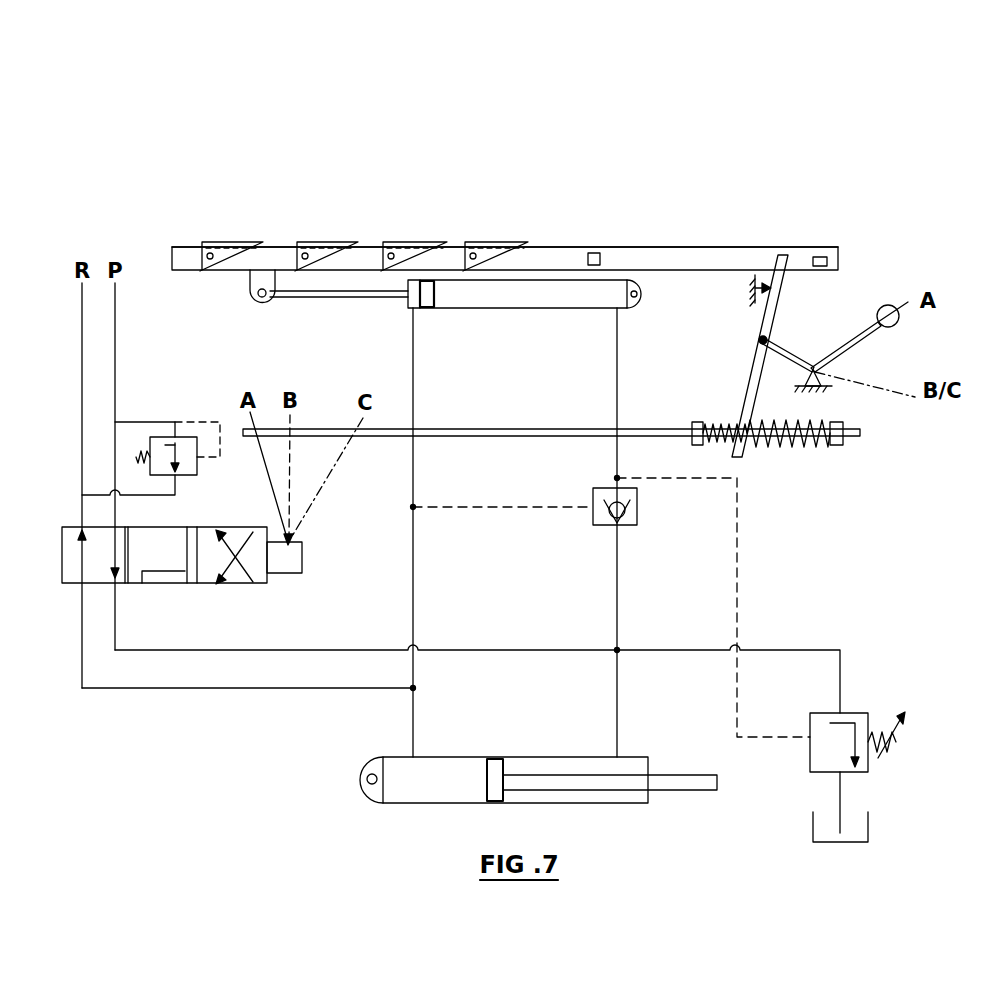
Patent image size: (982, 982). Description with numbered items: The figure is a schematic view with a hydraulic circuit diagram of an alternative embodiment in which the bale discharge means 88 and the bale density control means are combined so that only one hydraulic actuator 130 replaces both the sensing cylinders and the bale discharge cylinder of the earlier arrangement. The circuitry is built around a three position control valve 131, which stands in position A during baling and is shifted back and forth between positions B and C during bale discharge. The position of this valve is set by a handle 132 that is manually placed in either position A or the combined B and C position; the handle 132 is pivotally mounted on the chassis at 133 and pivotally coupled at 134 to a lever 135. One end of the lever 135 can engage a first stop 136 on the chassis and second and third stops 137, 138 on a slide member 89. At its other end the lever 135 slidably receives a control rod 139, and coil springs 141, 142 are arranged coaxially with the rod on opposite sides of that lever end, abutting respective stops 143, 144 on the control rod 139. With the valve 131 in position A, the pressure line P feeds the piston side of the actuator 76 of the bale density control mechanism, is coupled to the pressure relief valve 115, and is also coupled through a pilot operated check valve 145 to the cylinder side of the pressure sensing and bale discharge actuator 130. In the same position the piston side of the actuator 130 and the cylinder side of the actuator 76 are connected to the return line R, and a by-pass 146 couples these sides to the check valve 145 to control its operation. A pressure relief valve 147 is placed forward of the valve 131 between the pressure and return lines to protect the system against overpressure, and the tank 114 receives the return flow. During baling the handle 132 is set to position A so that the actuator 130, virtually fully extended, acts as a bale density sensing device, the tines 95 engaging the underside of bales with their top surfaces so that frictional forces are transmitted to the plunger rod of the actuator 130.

The actuator 76 is at (595, 804).
The bale discharge means 88 is at (564, 241).
The slide member 89 is at (370, 245).
The tines 95 is at (239, 242).
The tank 114 is at (870, 836).
The pressure relief valve 115 is at (810, 762).
The hydraulic actuator 130 is at (515, 310).
The three position control valve 131 is at (188, 584).
The handle 132 is at (846, 346).
The pivot 133 is at (835, 388).
The pivotal coupling 134 is at (760, 340).
The lever 135 is at (745, 378).
The first stop 136 is at (752, 292).
The second stop 137 is at (600, 255).
The third stop 138 is at (821, 257).
The control rod 139 is at (507, 428).
The coil spring 141 is at (720, 446).
The coil spring 142 is at (800, 447).
The stop 143 is at (692, 443).
The stop 144 is at (845, 446).
The pilot operated check valve 145 is at (638, 527).
The by-pass 146 is at (513, 505).
The pressure relief valve 147 is at (198, 476).